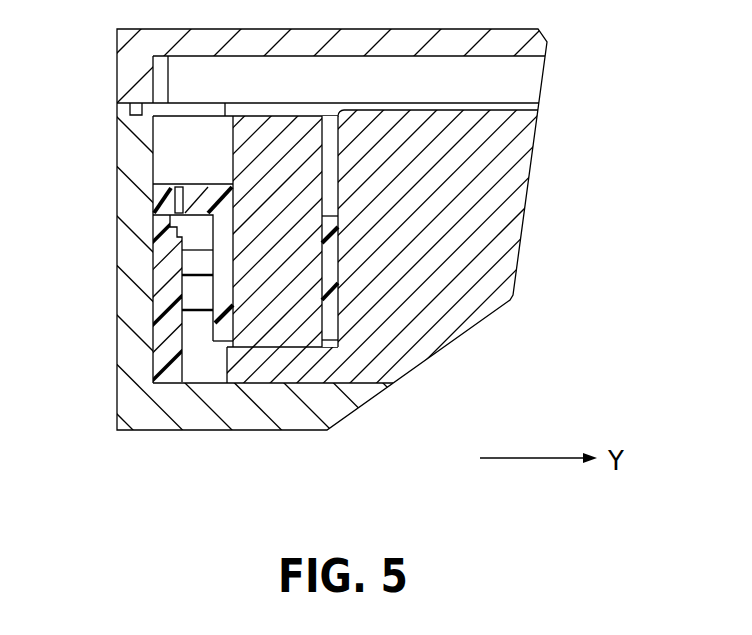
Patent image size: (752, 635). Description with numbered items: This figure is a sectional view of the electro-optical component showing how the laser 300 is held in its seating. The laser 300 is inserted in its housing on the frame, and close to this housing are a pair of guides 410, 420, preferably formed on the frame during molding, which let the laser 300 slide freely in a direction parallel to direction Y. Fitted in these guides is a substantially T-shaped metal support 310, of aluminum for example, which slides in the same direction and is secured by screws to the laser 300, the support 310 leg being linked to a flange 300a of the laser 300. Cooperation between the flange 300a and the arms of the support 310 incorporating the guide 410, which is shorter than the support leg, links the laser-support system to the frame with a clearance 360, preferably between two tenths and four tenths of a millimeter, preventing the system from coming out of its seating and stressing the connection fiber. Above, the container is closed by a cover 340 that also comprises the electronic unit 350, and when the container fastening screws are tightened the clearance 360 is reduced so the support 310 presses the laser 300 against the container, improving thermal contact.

The laser 300 is at (458, 327).
The flange 300a is at (283, 367).
The T-shaped metal support 310 is at (233, 147).
The cover 340 is at (546, 45).
The electronic unit 350 is at (535, 84).
The clearance 360 is at (320, 330).
The guide 410 is at (333, 313).
The guide 420 is at (217, 313).